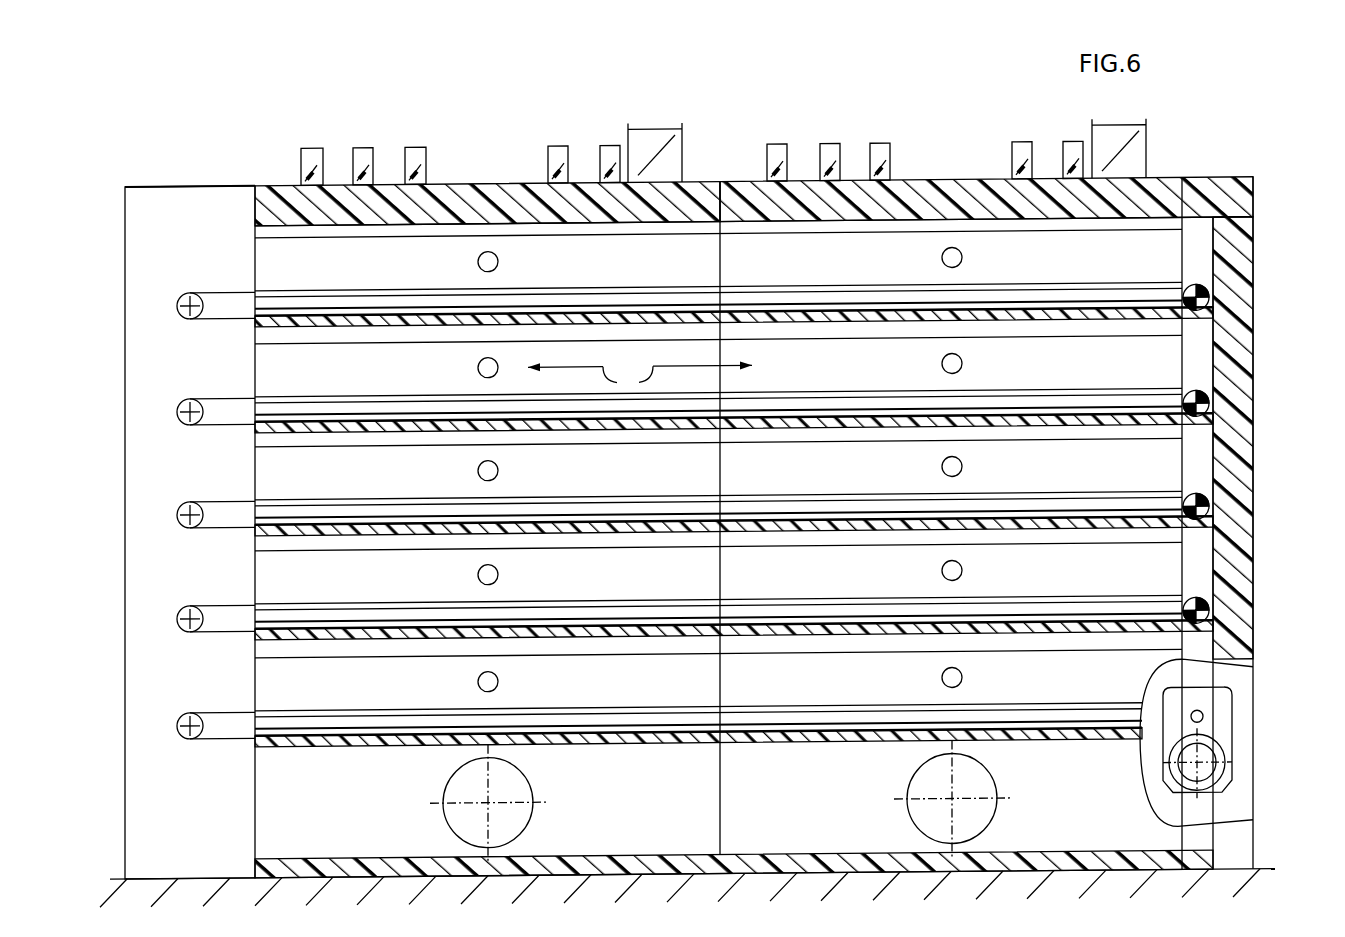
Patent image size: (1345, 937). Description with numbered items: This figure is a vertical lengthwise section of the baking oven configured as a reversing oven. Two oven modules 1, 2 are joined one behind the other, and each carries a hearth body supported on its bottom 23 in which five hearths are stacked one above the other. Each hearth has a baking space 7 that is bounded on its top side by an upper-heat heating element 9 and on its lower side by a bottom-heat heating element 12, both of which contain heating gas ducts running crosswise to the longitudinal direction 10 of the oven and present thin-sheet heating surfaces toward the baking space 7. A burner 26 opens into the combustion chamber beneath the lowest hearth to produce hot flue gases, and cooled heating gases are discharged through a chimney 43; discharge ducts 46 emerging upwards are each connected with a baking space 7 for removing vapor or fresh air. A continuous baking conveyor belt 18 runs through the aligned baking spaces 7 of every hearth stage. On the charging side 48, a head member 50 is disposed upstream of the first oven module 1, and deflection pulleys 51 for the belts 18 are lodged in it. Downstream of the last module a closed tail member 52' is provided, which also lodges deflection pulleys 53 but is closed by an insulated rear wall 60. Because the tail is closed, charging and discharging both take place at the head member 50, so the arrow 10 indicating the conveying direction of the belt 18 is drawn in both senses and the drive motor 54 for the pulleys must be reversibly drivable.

The oven module 1 is at (487, 186).
The oven module 2 is at (955, 186).
The baking space 7 is at (596, 273).
The upper-heat heating element 9 is at (882, 229).
The longitudinal direction 10 is at (640, 382).
The bottom-heat heating element 12 is at (856, 415).
The baking conveyor belt 18 is at (370, 290).
The bottom 23 is at (806, 862).
The burner 26 is at (533, 819).
The chimney 43 is at (887, 136).
The discharge duct 46 is at (413, 150).
The charging side 48 is at (58, 558).
The head member 50 is at (190, 187).
The deflection pulley 51 is at (180, 315).
The closed tail member 52' is at (1291, 522).
The deflection pulley 53 is at (1206, 418).
The drive motor 54 is at (1205, 773).
The insulated rear wall 60 is at (1232, 372).